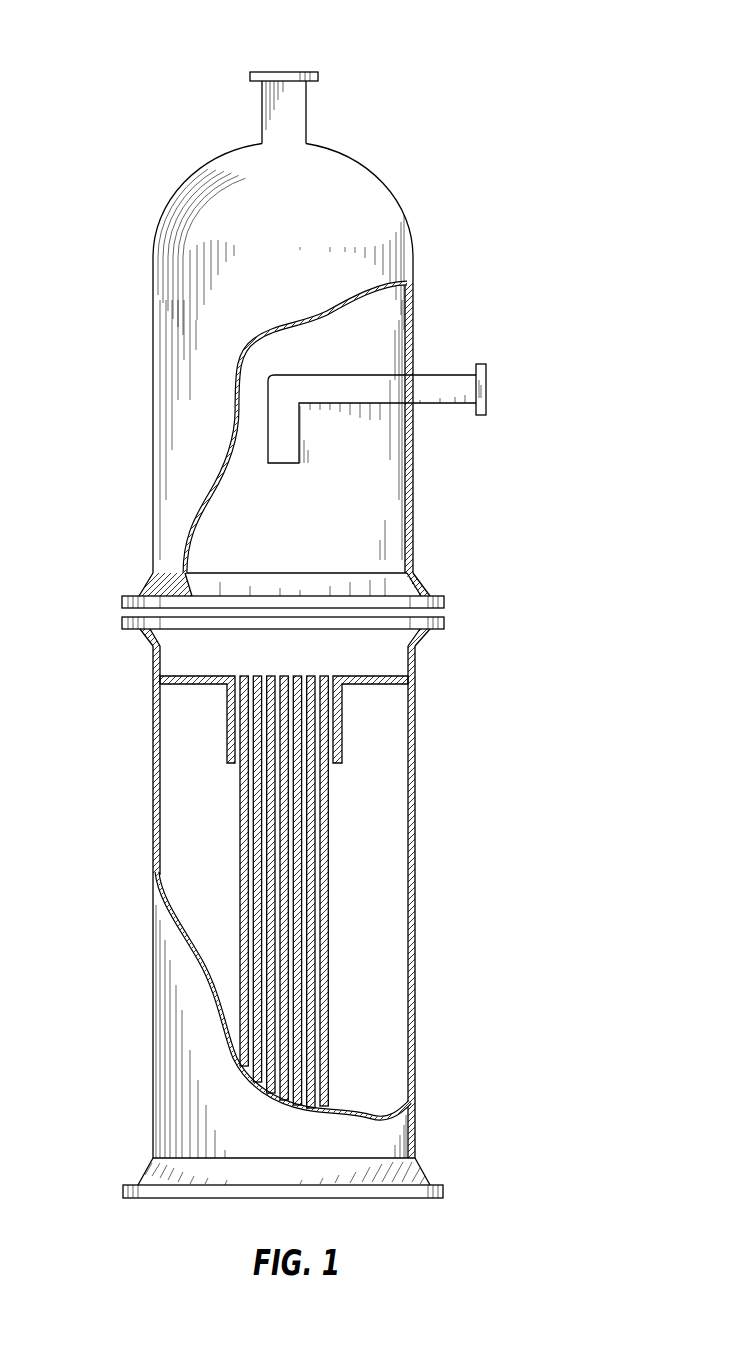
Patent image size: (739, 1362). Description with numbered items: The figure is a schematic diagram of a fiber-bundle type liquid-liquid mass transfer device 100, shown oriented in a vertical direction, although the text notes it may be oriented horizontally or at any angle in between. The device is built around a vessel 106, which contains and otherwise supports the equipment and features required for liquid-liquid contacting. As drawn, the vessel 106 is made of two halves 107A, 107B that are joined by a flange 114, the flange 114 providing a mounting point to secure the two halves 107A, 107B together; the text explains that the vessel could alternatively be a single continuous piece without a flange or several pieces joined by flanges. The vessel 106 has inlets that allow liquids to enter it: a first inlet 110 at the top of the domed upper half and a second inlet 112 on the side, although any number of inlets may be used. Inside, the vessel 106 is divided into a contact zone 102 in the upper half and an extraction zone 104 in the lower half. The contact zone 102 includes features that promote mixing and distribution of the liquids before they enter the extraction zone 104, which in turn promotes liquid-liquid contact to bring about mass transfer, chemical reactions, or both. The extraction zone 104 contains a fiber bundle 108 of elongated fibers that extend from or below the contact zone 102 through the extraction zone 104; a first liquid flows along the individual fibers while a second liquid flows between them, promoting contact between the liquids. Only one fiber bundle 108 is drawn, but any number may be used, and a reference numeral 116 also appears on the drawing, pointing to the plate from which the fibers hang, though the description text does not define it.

The fiber-bundle type liquid-liquid mass transfer device 100 is at (532, 50).
The contact zone 102 is at (122, 595).
The extraction zone 104 is at (98, 628).
The vessel 106 is at (408, 197).
The first vessel half 107A is at (413, 258).
The second vessel half 107B is at (415, 920).
The fiber bundle 108 is at (330, 843).
The first inlet 110 is at (268, 72).
The second inlet 112 is at (484, 369).
The flange 114 is at (435, 596).
The tube sheet 116 is at (388, 676).